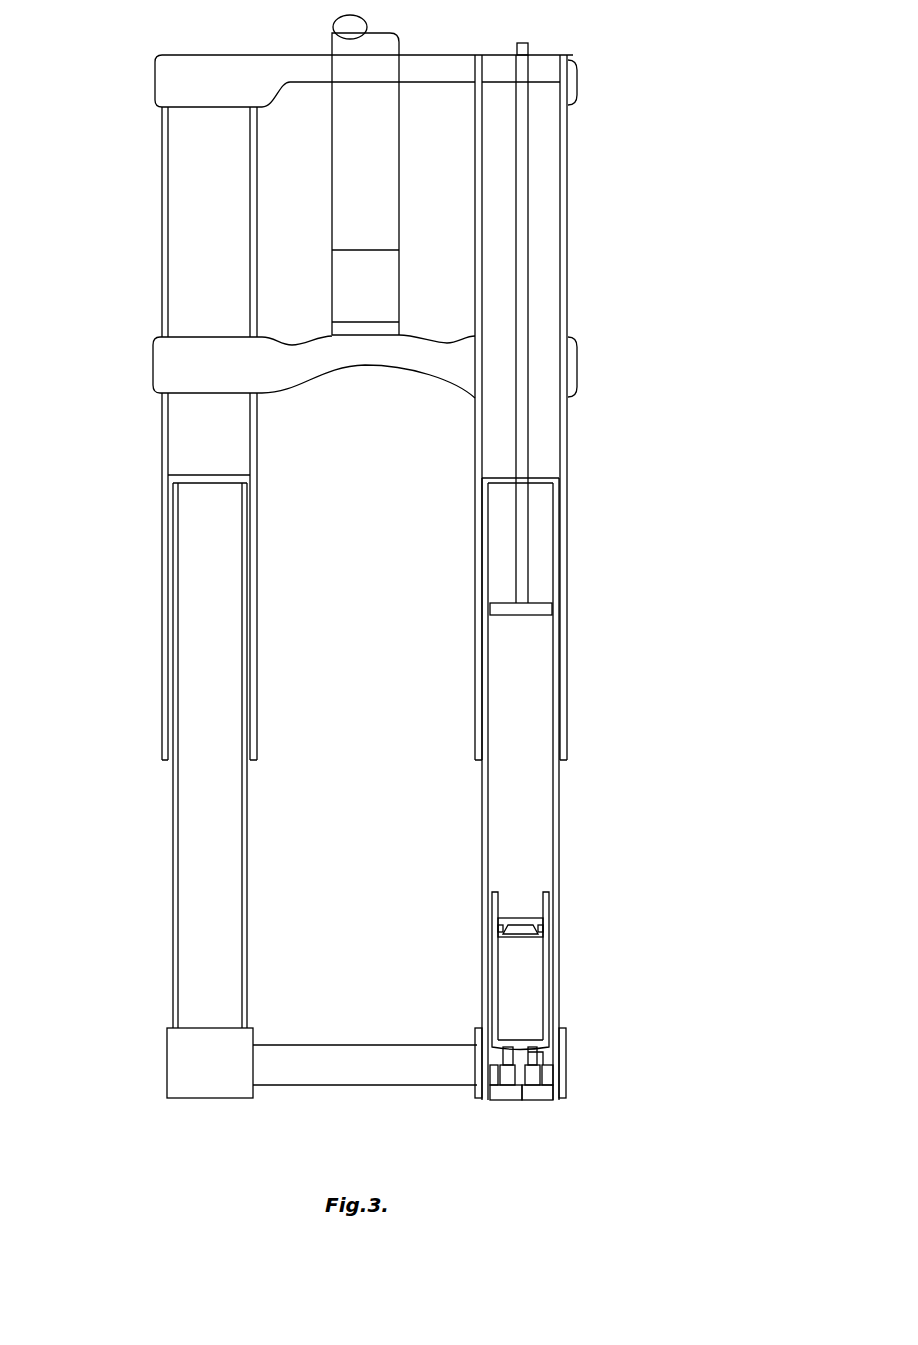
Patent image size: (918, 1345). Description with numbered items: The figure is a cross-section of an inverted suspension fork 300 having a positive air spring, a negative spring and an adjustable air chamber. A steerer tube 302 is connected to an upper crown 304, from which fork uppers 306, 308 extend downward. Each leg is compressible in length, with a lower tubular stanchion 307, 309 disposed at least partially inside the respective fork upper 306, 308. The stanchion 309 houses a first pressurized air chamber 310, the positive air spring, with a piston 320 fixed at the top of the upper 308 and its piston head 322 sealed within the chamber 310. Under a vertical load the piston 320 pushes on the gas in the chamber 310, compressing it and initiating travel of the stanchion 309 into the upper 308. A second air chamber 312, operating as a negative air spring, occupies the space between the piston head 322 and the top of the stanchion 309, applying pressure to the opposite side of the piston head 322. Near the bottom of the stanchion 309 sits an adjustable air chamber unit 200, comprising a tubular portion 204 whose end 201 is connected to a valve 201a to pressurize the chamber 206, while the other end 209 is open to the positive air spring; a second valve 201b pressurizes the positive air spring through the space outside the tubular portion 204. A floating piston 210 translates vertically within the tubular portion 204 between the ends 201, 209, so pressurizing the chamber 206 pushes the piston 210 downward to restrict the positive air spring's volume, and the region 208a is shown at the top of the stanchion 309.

The adjustable air chamber unit 200 is at (556, 283).
The end of tubular portion 201 is at (527, 1023).
The valve 201a is at (538, 1103).
The valve 201b is at (503, 1103).
The tubular portion 204 is at (553, 983).
The chamber 206 is at (515, 965).
The cylinder upper end 208a is at (553, 887).
The open end 209 is at (515, 900).
The floating piston 210 is at (522, 938).
The suspension fork 300 is at (420, 575).
The steerer tube 302 is at (332, 33).
The upper crown 304 is at (155, 88).
The fork upper 306 is at (162, 258).
The stanchion 307 is at (253, 957).
The fork upper 308 is at (568, 440).
The stanchion 309 is at (560, 955).
The first pressurized air chamber 310 is at (522, 713).
The second air chamber 312 is at (538, 532).
The piston 320 is at (530, 113).
The piston head 322 is at (528, 618).